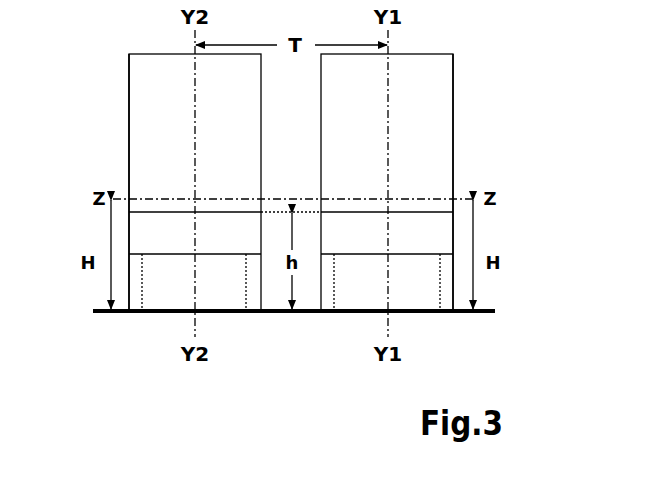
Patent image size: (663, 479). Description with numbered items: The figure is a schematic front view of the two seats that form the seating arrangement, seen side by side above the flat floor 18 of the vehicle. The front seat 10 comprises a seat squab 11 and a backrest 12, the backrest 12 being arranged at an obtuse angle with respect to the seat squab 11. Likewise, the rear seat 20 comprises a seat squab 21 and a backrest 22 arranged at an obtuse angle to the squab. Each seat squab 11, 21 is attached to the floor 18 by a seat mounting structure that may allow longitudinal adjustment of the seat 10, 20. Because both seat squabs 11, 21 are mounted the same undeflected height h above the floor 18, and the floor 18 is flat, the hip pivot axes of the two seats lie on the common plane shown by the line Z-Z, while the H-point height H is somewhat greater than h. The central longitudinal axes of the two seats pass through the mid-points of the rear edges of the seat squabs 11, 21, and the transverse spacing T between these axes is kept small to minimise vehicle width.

The front seat 10 is at (454, 93).
The seat squab 11 is at (387, 261).
The backrest 12 is at (453, 143).
The floor 18 is at (486, 306).
The rear seat 20 is at (128, 93).
The seat squab 21 is at (195, 261).
The backrest 22 is at (129, 137).